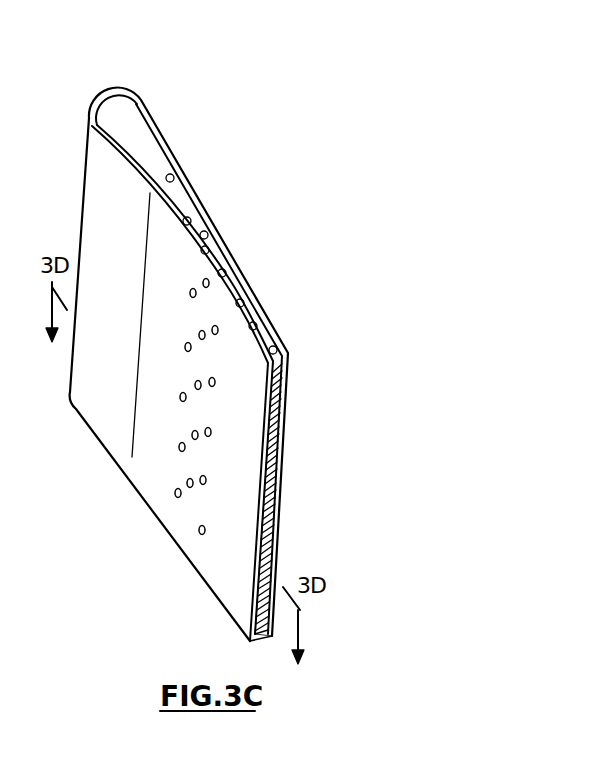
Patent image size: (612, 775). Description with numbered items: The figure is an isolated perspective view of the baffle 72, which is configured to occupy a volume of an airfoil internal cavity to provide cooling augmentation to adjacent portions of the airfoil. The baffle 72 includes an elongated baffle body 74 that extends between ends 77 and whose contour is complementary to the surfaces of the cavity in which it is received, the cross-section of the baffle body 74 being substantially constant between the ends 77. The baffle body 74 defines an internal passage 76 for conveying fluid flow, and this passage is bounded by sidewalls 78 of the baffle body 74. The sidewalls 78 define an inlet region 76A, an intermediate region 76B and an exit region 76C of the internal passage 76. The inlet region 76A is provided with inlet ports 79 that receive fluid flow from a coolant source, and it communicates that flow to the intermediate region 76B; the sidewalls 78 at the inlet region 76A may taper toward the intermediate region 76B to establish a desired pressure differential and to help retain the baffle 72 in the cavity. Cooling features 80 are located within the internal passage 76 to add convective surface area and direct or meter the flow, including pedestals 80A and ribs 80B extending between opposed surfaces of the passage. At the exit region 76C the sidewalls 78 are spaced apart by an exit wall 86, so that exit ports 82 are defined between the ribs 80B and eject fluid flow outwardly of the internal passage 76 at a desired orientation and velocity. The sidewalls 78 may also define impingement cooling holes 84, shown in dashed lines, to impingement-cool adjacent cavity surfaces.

The baffle 72 is at (52, 154).
The baffle body 74 is at (152, 130).
The internal passage 76 is at (140, 92).
The inlet region 76A is at (176, 178).
The intermediate region 76B is at (212, 234).
The exit region 76C is at (273, 350).
The ends 77 is at (170, 150).
The sidewalls 78 is at (225, 248).
The inlet ports 79 is at (140, 122).
The cooling features 80 is at (258, 327).
The pedestals 80A is at (190, 220).
The ribs 80B is at (283, 403).
The exit ports 82 is at (280, 443).
The impingement cooling holes 84 is at (190, 492).
The exit wall 86 is at (277, 503).